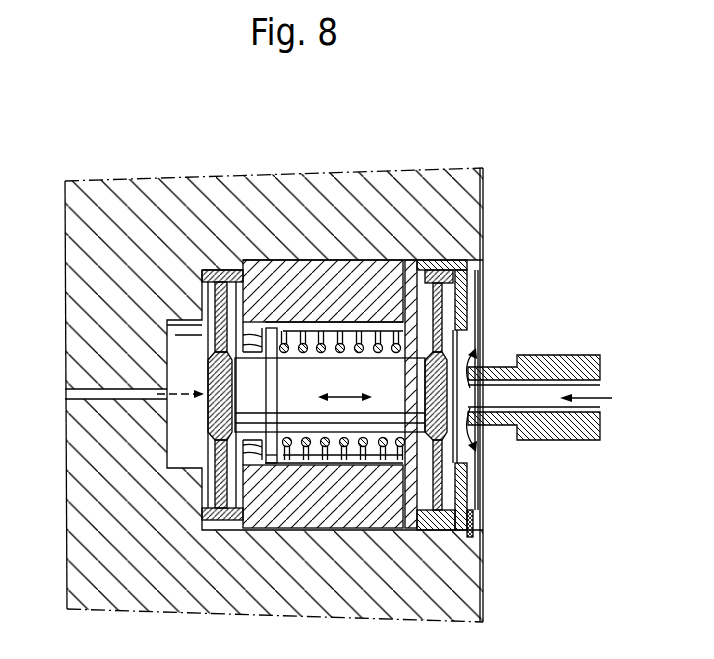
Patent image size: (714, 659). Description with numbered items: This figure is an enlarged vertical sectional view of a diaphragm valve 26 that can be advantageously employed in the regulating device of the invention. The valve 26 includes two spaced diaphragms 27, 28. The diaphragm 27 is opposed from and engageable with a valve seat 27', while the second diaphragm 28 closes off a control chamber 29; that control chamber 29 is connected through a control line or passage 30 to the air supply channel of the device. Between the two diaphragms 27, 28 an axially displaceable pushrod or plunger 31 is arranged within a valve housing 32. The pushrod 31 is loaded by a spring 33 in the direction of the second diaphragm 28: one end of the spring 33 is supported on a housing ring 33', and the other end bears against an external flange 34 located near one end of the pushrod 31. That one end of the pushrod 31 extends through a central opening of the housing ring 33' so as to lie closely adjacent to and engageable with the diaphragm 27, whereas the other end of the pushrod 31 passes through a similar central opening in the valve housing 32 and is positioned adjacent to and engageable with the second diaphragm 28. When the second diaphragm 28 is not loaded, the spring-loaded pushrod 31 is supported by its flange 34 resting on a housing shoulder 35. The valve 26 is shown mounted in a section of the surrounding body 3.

The housing body 3 is at (409, 178).
The diaphragm valve 26 is at (551, 176).
The diaphragm 27 is at (356, 398).
The valve seat 27' is at (539, 385).
The second diaphragm 28 is at (210, 428).
The control chamber 29 is at (180, 361).
The control line 30 is at (113, 384).
The pushrod 31 is at (328, 360).
The valve housing 32 is at (340, 268).
The spring 33 is at (340, 318).
The housing ring 33' is at (344, 477).
The external flange 34 is at (273, 380).
The housing shoulder 35 is at (242, 340).